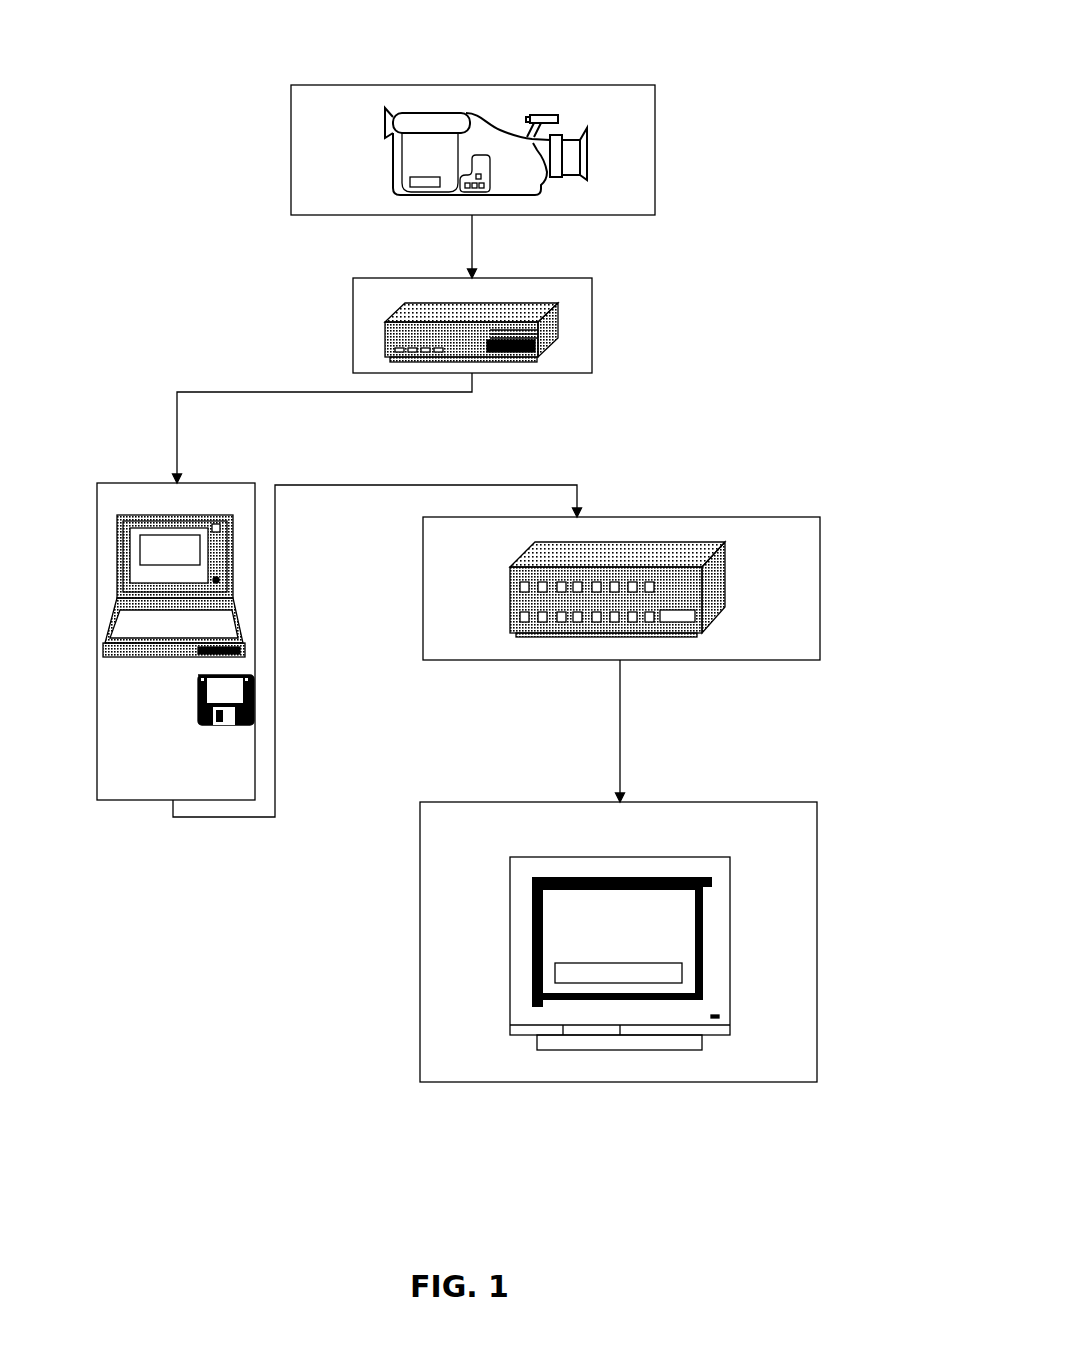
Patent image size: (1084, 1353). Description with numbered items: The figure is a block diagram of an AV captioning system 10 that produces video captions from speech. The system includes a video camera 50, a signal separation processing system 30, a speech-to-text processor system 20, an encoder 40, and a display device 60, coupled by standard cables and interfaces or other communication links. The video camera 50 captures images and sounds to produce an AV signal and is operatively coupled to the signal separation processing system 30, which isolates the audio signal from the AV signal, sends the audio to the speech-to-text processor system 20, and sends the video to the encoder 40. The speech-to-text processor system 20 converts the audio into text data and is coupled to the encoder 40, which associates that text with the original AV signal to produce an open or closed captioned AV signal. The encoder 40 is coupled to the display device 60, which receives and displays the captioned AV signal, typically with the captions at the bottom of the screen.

The AV captioning system 10 is at (796, 50).
The speech-to-text processor system 20 is at (231, 463).
The signal separation processing system 30 is at (582, 258).
The encoder 40 is at (791, 496).
The video camera 50 is at (648, 72).
The display device 60 is at (759, 782).